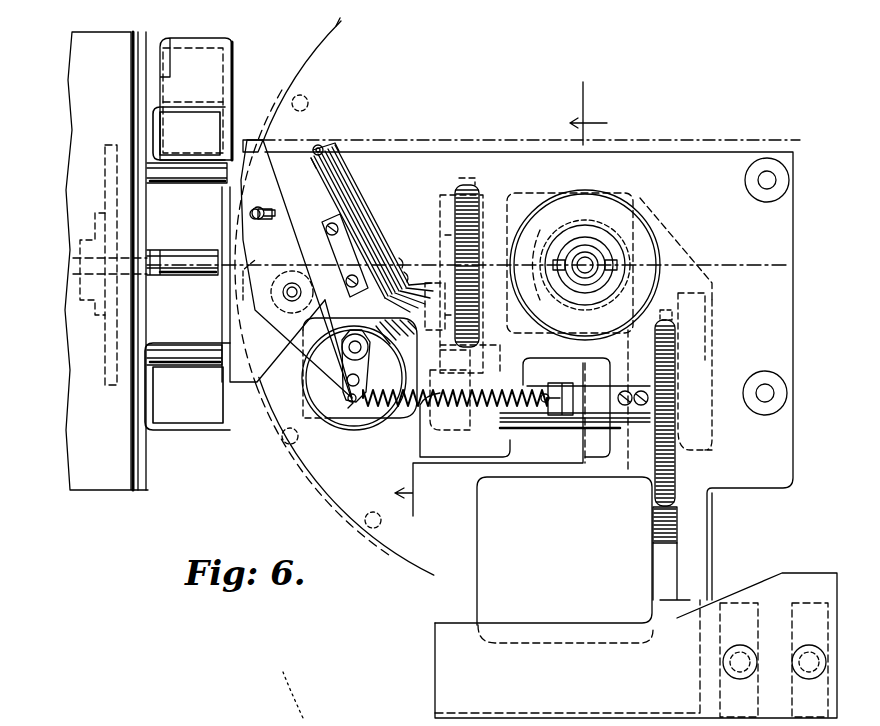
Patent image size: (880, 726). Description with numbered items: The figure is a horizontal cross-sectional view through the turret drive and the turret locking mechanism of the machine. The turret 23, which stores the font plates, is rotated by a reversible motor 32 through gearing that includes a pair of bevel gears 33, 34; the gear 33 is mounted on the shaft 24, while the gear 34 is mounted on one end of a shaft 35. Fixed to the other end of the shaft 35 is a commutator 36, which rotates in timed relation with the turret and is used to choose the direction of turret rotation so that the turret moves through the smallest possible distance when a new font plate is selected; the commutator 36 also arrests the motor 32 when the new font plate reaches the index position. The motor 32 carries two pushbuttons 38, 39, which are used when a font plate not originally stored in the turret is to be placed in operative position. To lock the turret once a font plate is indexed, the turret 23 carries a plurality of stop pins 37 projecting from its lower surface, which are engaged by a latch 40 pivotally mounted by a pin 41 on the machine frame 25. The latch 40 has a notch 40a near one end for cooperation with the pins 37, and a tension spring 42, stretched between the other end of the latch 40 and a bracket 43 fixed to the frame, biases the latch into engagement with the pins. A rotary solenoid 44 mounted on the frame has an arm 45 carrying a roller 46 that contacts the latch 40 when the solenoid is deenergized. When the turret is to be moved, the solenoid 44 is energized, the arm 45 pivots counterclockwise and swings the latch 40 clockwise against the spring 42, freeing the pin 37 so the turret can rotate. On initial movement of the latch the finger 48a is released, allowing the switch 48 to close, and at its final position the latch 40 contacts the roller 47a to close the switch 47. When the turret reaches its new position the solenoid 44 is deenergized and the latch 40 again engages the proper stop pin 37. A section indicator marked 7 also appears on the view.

The section line 7- 7 is at (501, 299).
The turret 23 is at (330, 512).
The shaft 24 is at (585, 265).
The machine frame 25 is at (702, 160).
The reversible motor 32 is at (477, 535).
The bevel gear 33 is at (660, 288).
The bevel gear 34 is at (548, 230).
The shaft 35 is at (193, 278).
The commutator 36 is at (114, 145).
The stop pins 37 is at (306, 98).
The pushbutton 38 is at (737, 645).
The pushbutton 39 is at (808, 645).
The latch 40 is at (262, 180).
The notch 40a is at (270, 214).
The pin 41 is at (292, 300).
The tension spring 42 is at (423, 407).
The bracket 43 is at (596, 410).
The rotary solenoid 44 is at (362, 426).
The arm 45 is at (360, 369).
The roller 46 is at (358, 334).
The switch 47 is at (360, 196).
The roller 47a is at (320, 145).
The switch 48 is at (220, 65).
The finger 48a is at (245, 150).